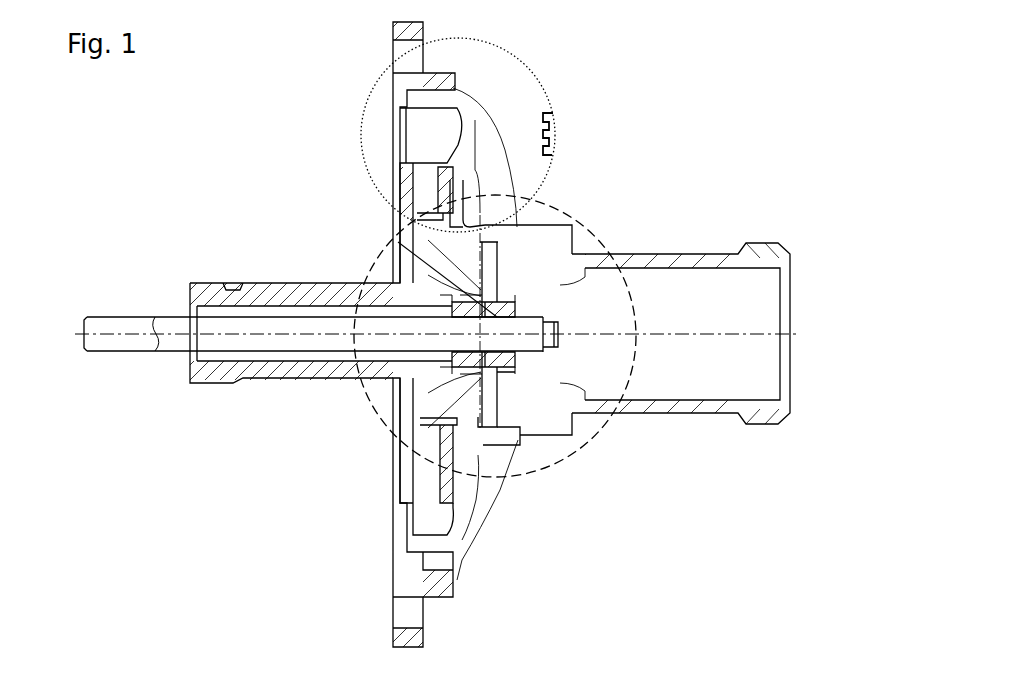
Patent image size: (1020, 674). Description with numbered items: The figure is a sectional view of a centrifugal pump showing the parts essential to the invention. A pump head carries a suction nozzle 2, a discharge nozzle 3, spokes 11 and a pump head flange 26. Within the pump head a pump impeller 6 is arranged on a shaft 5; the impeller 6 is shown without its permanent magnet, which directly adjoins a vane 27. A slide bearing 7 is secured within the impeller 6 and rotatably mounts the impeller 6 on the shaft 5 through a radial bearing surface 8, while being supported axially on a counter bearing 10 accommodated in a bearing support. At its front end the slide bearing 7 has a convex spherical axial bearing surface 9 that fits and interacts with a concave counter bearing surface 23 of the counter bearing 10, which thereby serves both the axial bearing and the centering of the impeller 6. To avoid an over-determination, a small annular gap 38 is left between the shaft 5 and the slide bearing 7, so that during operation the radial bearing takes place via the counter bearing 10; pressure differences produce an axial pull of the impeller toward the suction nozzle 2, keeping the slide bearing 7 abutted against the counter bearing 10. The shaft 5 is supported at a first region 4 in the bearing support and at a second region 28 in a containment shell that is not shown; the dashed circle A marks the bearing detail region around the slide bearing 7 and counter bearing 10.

The suction nozzle 2 is at (715, 263).
The discharge nozzle 3 is at (517, 87).
The first region 4 is at (497, 340).
The shaft 5 is at (228, 345).
The pump impeller 6 is at (396, 236).
The slide bearing 7 is at (452, 357).
The radial bearing surface 8 is at (497, 333).
The convex spherical axial bearing surface 9 is at (497, 302).
The counter bearing 10 is at (486, 345).
The spokes 11 is at (530, 282).
The concave counter bearing surface 23 is at (480, 350).
The pump head flange 26 is at (398, 29).
The vane 27 is at (407, 190).
The second region 28 is at (124, 345).
The annular gap 38 is at (470, 360).
The detail region A is at (588, 232).